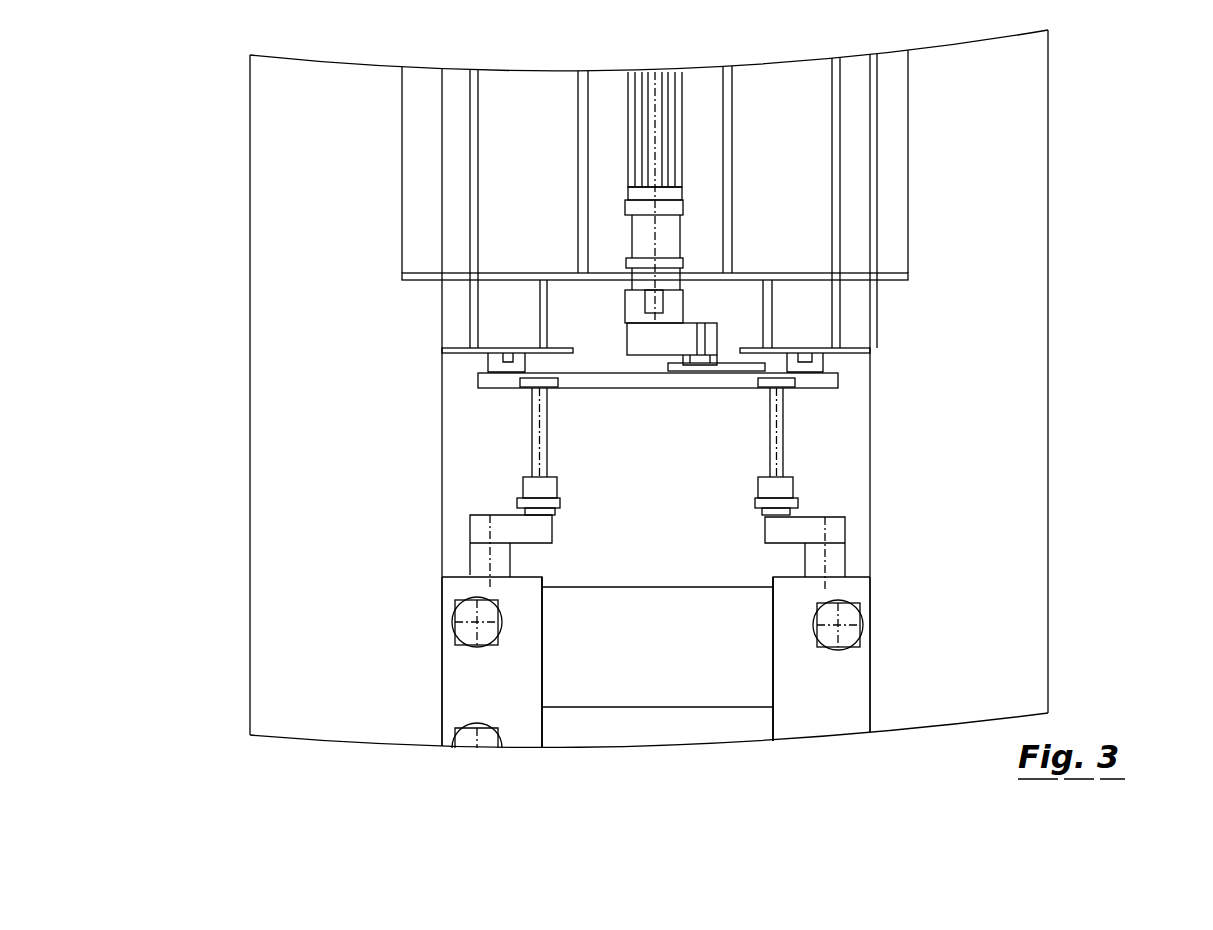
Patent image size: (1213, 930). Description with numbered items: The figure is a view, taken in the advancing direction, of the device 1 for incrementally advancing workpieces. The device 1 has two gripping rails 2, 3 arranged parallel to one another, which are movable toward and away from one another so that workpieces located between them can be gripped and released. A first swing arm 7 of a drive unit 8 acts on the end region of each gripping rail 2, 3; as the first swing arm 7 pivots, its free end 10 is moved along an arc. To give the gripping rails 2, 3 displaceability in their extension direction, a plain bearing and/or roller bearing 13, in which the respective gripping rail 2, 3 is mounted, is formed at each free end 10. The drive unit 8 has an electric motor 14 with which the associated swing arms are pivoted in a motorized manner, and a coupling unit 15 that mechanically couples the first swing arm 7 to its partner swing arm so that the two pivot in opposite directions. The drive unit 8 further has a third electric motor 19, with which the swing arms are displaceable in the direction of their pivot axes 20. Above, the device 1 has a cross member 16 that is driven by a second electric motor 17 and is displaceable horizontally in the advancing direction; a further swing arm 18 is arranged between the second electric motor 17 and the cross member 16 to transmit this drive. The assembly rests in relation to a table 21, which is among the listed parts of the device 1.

The device 1 is at (1132, 400).
The gripping rail 2 is at (800, 498).
The gripping rail 3 is at (513, 493).
The first swing arm 7 is at (523, 533).
The drive unit 8 is at (430, 715).
The free end 10 is at (552, 550).
The plain bearing and/or roller bearing 13 is at (510, 480).
The electric motor 14 is at (461, 612).
The coupling unit 15 is at (450, 673).
The cross member 16 is at (603, 383).
The second electric motor 17 is at (676, 123).
The further swing arm 18 is at (685, 340).
The third electric motor 19 is at (462, 731).
The pivot axis 20 is at (490, 573).
The table 21 is at (653, 678).